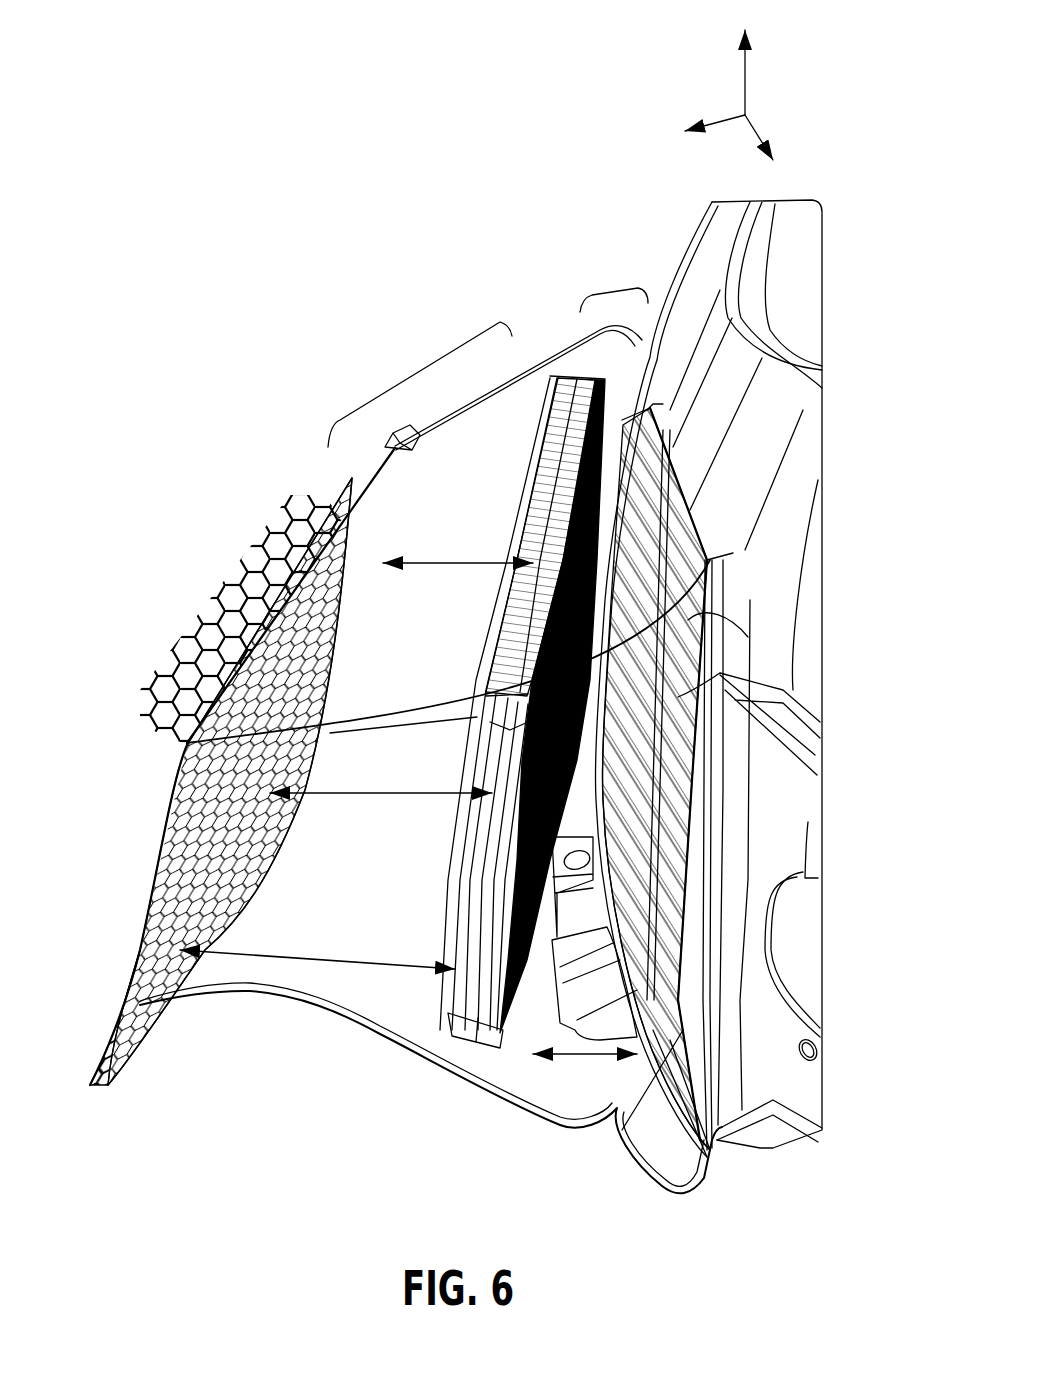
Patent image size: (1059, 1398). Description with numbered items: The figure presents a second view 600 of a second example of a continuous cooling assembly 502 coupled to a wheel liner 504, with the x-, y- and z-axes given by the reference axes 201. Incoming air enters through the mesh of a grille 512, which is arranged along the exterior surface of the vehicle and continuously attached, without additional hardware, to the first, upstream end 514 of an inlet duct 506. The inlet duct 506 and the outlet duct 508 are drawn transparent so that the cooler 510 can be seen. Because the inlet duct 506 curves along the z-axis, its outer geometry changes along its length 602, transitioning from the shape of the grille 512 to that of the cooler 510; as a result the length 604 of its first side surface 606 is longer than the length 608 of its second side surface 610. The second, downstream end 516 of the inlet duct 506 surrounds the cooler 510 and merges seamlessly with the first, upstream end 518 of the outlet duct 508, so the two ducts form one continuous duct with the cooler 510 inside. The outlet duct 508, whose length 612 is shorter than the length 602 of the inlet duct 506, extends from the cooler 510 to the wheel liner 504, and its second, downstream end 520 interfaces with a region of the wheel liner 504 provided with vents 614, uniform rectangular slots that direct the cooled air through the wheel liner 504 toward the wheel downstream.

The reference axes 201 is at (796, 82).
The second view 600 is at (125, 172).
The continuous cooling assembly 502 is at (297, 356).
The wheel liner 504 is at (677, 300).
The inlet duct 506 is at (415, 372).
The outlet duct 508 is at (665, 701).
The cooler 510 is at (550, 455).
The grille 512 is at (188, 637).
The first end of the inlet duct 514 is at (178, 858).
The second end of the inlet duct 516 is at (455, 918).
The first end of the outlet duct 518 is at (579, 412).
The second end of the outlet duct 520 is at (687, 527).
The length of the inlet duct 602 is at (378, 806).
The length of the first side surface 604 is at (297, 958).
The first side surface 606 is at (364, 990).
The length of the second side surface 608 is at (477, 575).
The second side surface 610 is at (475, 435).
The length of the outlet duct 612 is at (585, 1062).
The vents 614 is at (720, 673).